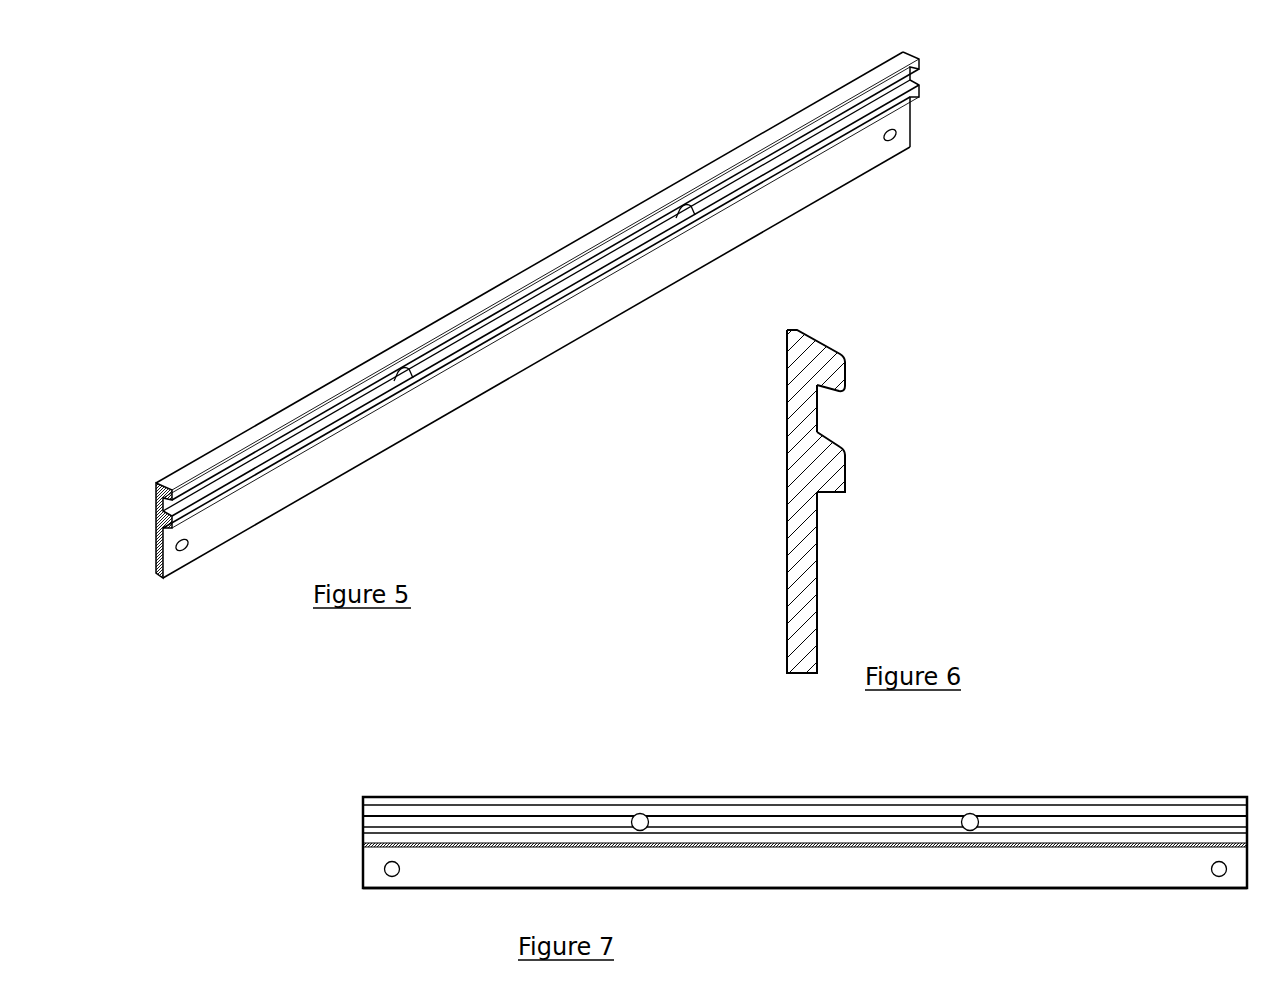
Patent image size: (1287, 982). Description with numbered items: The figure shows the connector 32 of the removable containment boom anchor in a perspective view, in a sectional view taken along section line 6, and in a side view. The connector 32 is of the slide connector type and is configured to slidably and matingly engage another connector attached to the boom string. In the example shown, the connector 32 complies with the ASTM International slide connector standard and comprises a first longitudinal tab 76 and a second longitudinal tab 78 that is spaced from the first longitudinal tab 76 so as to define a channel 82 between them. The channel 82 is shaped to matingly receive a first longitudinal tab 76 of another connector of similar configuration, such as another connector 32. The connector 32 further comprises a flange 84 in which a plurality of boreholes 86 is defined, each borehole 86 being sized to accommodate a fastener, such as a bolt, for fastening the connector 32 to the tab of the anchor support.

In FIG. 5, the connector 32 is at (962, 62).
In FIG. 6, the connector 32 is at (938, 346).
In FIG. 7, the connector 32 is at (1183, 756).
In FIG. 5, the first longitudinal tab 76 is at (566, 260).
In FIG. 6, the first longitudinal tab 76 is at (838, 374).
In FIG. 6, the second longitudinal tab 78 is at (840, 476).
In FIG. 6, the channel 82 is at (848, 427).
In FIG. 5, the flange 84 is at (565, 327).
In FIG. 6, the flange 84 is at (800, 553).
In FIG. 7, the flange 84 is at (776, 878).
In FIG. 5, the borehole 86 is at (200, 546).
In FIG. 7, the borehole 86 is at (383, 876).
In FIG. 5, the section line 6- 6 is at (267, 419).